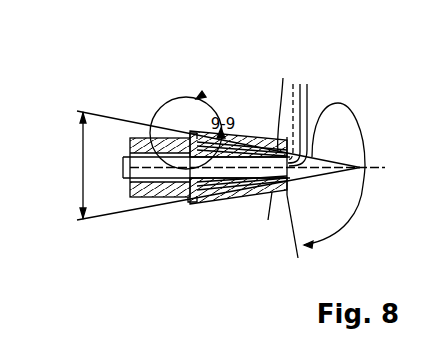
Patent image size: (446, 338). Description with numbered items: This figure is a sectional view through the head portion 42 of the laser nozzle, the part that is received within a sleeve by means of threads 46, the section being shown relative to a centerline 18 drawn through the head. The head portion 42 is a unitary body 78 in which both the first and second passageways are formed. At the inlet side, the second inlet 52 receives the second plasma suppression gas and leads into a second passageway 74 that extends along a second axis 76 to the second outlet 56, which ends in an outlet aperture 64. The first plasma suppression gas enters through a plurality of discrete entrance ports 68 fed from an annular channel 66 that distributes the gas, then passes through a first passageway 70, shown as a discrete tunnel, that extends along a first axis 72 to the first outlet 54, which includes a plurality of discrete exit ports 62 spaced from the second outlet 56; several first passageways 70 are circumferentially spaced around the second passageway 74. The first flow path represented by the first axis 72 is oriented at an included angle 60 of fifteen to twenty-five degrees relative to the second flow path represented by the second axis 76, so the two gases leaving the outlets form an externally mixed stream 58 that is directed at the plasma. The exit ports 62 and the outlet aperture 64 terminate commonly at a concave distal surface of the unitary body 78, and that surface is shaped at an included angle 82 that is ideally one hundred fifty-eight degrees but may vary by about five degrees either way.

The longitudinal axis 18 is at (364, 168).
The head portion 42 is at (151, 48).
The threads 46 is at (135, 137).
The second inlet 52 is at (130, 180).
The first outlet 54 is at (277, 148).
The second outlet 56 is at (272, 157).
The externally mixed stream 58 is at (318, 142).
The included angle 60 is at (78, 167).
The exit ports 62 is at (303, 93).
The outlet aperture 64 is at (322, 107).
The channel 66 is at (192, 203).
The entrance ports 68 is at (199, 131).
The first passageway 70 is at (222, 192).
The first axis 72 is at (331, 174).
The second passageway 74 is at (243, 190).
The second axis 76 is at (362, 152).
The unitary body 78 is at (255, 192).
The included angle 82 is at (343, 219).